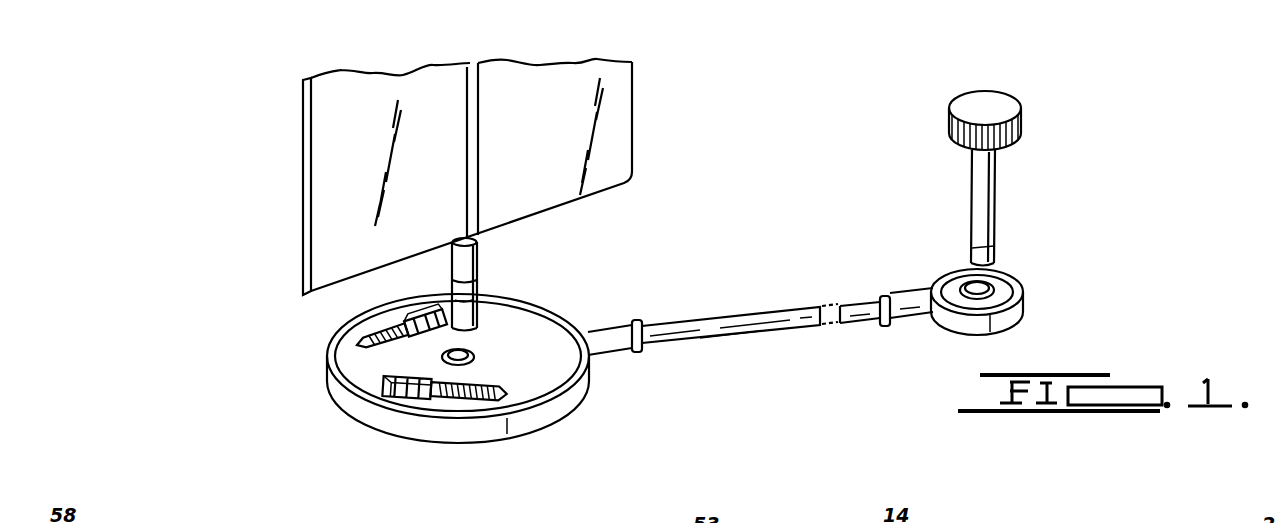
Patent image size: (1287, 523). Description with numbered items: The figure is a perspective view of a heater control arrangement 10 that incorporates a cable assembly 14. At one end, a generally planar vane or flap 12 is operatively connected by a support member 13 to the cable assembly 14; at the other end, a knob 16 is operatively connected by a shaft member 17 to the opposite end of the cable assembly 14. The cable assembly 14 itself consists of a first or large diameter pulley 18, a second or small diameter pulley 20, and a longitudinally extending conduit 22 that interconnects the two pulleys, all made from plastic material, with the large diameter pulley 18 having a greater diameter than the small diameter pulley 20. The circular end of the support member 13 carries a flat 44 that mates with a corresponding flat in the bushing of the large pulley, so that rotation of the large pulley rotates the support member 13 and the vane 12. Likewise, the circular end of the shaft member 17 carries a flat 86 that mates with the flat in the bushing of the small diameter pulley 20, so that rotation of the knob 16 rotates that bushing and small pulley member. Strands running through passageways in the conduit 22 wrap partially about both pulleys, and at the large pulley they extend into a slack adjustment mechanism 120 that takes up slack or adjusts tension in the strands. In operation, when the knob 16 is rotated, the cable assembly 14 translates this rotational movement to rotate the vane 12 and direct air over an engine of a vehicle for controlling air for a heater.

The heater control arrangement 10 is at (247, 158).
The vane 12 is at (615, 117).
The support member 13 is at (478, 258).
The flat 44 is at (480, 298).
The slack adjustment mechanism 120 is at (419, 335).
The large diameter pulley 18 is at (576, 407).
The cable assembly 14 is at (750, 311).
The conduit 22 is at (738, 330).
The small diameter pulley 20 is at (1025, 308).
The shaft member 17 is at (994, 180).
The flat 86 is at (976, 247).
The knob 16 is at (1023, 120).